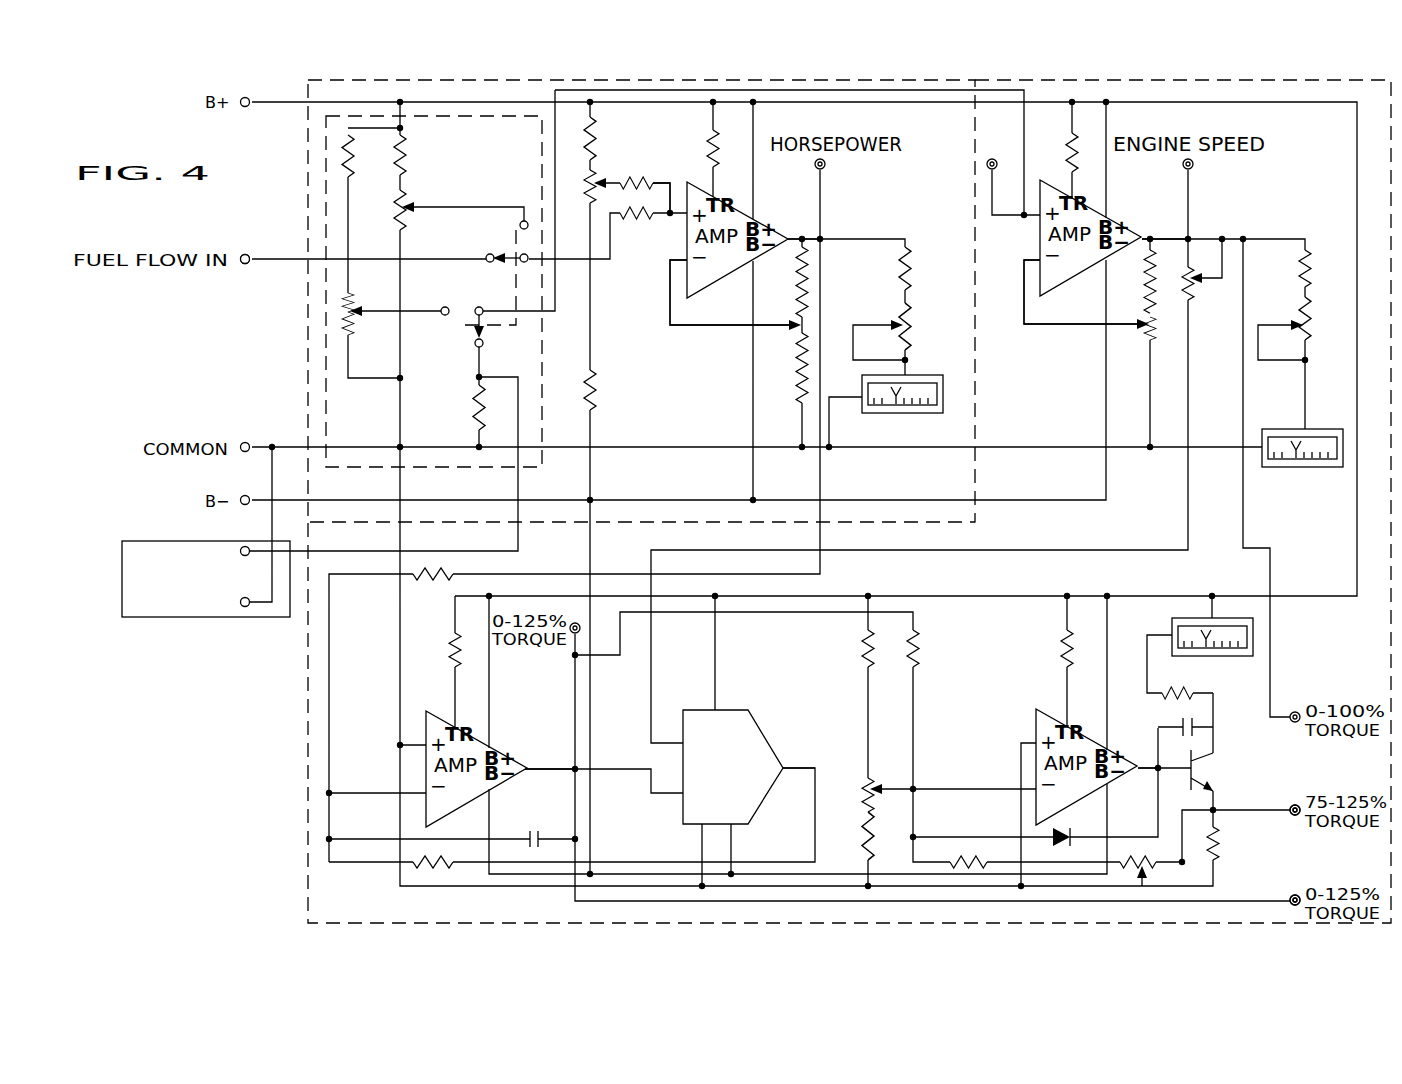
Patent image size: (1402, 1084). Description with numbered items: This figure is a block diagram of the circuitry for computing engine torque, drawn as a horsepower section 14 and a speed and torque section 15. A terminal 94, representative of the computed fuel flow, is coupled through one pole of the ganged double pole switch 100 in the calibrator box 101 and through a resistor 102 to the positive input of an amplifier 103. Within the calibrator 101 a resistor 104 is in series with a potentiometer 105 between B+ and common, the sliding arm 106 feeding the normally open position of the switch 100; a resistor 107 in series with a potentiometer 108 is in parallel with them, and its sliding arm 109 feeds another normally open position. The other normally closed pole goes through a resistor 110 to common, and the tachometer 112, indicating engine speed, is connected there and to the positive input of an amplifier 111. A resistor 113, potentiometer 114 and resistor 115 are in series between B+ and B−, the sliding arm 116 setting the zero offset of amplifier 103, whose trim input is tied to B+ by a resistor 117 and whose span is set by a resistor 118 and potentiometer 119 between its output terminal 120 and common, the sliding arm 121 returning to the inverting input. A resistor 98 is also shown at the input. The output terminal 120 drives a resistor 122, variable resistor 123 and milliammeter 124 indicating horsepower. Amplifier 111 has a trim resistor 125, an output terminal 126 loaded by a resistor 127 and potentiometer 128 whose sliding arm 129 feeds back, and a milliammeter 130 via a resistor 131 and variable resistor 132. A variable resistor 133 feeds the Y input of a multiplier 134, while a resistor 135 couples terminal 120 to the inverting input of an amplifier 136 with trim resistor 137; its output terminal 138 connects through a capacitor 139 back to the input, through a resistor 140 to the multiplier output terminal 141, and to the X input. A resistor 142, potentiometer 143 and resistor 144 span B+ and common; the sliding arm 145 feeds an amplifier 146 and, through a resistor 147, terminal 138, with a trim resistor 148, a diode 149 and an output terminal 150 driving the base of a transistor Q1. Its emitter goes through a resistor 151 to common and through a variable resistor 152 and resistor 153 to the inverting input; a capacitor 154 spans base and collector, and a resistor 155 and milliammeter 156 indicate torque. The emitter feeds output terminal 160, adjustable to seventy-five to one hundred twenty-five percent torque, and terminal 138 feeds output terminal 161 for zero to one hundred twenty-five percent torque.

The fuel flow / horsepower computing section 14 is at (308, 164).
The circuit 15 is at (1100, 80).
The terminal 94 is at (249, 264).
The resistor 98 is at (642, 180).
The ganged double pole switch 100 is at (509, 250).
The calibrator box 101 is at (543, 370).
The resistor 102 is at (656, 220).
The amplifier 103 is at (729, 278).
The resistor 104 is at (406, 166).
The potentiometer 105 is at (408, 220).
The sliding arm 106 is at (412, 208).
The resistor 107 is at (370, 165).
The potentiometer 108 is at (352, 297).
The sliding arm 109 is at (370, 322).
The resistor 110 is at (469, 396).
The amplifier 111 is at (1076, 278).
The tachometer 112 is at (135, 541).
The resistor 113 is at (595, 123).
The potentiometer 114 is at (602, 182).
The resistor 115 is at (598, 392).
The sliding arm 116 is at (618, 174).
The resistor 117 is at (720, 154).
The resistor 118 is at (800, 274).
The potentiometer 119 is at (790, 340).
The output terminal 120 is at (791, 236).
The sliding arm 121 is at (720, 328).
The resistor 122 is at (908, 274).
The variable resistor 123 is at (908, 330).
The milliammeter 124 is at (908, 376).
The resistor 125 is at (1054, 154).
The output terminal 126 is at (1142, 236).
The resistor 127 is at (1140, 280).
The potentiometer 128 is at (1149, 328).
The sliding arm 129 is at (1076, 326).
The milliammeter 130 is at (1318, 430).
The resistor 131 is at (1302, 272).
The variable resistor 132 is at (1312, 328).
The variable resistor 133 is at (1190, 290).
The multiplier 134 is at (736, 710).
The resistor 135 is at (440, 578).
The amplifier 136 is at (470, 802).
The resistor 137 is at (454, 658).
The output terminal 138 is at (531, 764).
The capacitor 139 is at (530, 834).
The resistor 140 is at (445, 866).
The output terminal 141 is at (792, 762).
The resistor 142 is at (862, 645).
The potentiometer 143 is at (872, 782).
The resistor 144 is at (865, 826).
The sliding arm 145 is at (880, 792).
The amplifier 146 is at (1088, 736).
The resistor 147 is at (920, 654).
The resistor 148 is at (1060, 646).
The diode 149 is at (1058, 839).
The output terminal 150 is at (1136, 760).
The resistor 151 is at (1222, 848).
The variable resistor 152 is at (1138, 851).
The resistor 153 is at (966, 862).
The capacitor 154 is at (1186, 710).
The resistor 155 is at (1180, 686).
The milliammeter 156 is at (1173, 621).
The output terminal 160 is at (1290, 806).
The output terminal 161 is at (1286, 899).
The transistor Q1 is at (1208, 764).